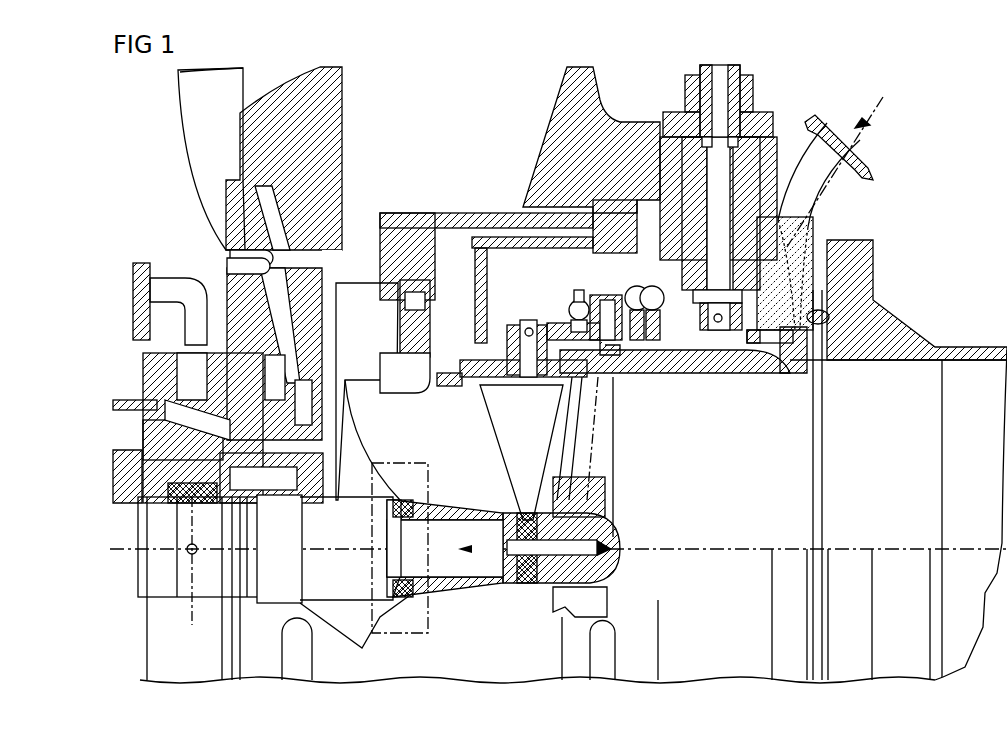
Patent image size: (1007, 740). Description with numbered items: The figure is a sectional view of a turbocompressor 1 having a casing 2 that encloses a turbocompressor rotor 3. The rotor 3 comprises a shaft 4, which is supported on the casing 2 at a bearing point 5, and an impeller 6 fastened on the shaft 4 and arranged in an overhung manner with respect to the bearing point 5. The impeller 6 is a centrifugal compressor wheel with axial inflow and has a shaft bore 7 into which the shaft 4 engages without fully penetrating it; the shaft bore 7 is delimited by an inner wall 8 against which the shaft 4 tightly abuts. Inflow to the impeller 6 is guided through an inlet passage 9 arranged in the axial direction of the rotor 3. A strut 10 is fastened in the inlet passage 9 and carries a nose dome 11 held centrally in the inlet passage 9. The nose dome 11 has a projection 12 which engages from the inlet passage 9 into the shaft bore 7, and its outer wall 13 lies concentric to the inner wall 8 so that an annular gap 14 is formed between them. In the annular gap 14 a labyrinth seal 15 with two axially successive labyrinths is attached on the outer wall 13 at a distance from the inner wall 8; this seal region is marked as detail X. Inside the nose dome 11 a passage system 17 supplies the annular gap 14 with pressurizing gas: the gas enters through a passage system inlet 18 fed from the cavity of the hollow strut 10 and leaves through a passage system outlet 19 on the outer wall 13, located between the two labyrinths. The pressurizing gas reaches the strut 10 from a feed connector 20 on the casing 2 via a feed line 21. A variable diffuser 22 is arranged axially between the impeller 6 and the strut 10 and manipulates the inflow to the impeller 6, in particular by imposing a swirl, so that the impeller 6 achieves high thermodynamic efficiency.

The turbocompressor 1 is at (926, 198).
The casing 2 is at (885, 322).
The turbocompressor rotor 3 is at (335, 658).
The shaft 4 is at (272, 603).
The bearing point 5 is at (200, 607).
The impeller 6 is at (353, 360).
The shaft bore 7 is at (340, 500).
The inner wall 8 is at (360, 515).
The inlet passage 9 is at (749, 471).
The strut 10 is at (613, 435).
The nose dome 11 is at (612, 537).
The projection 12 is at (387, 577).
The outer wall 13 is at (413, 602).
The annular gap 14 is at (415, 500).
The labyrinth seal 15 is at (403, 500).
The passage system 17 is at (545, 585).
The passage system inlet 18 is at (603, 490).
The passage system outlet 19 is at (387, 524).
The feed connector 20 is at (862, 168).
The feed line 21 is at (805, 243).
The variable diffuser 22 is at (478, 403).
The detail X is at (432, 633).